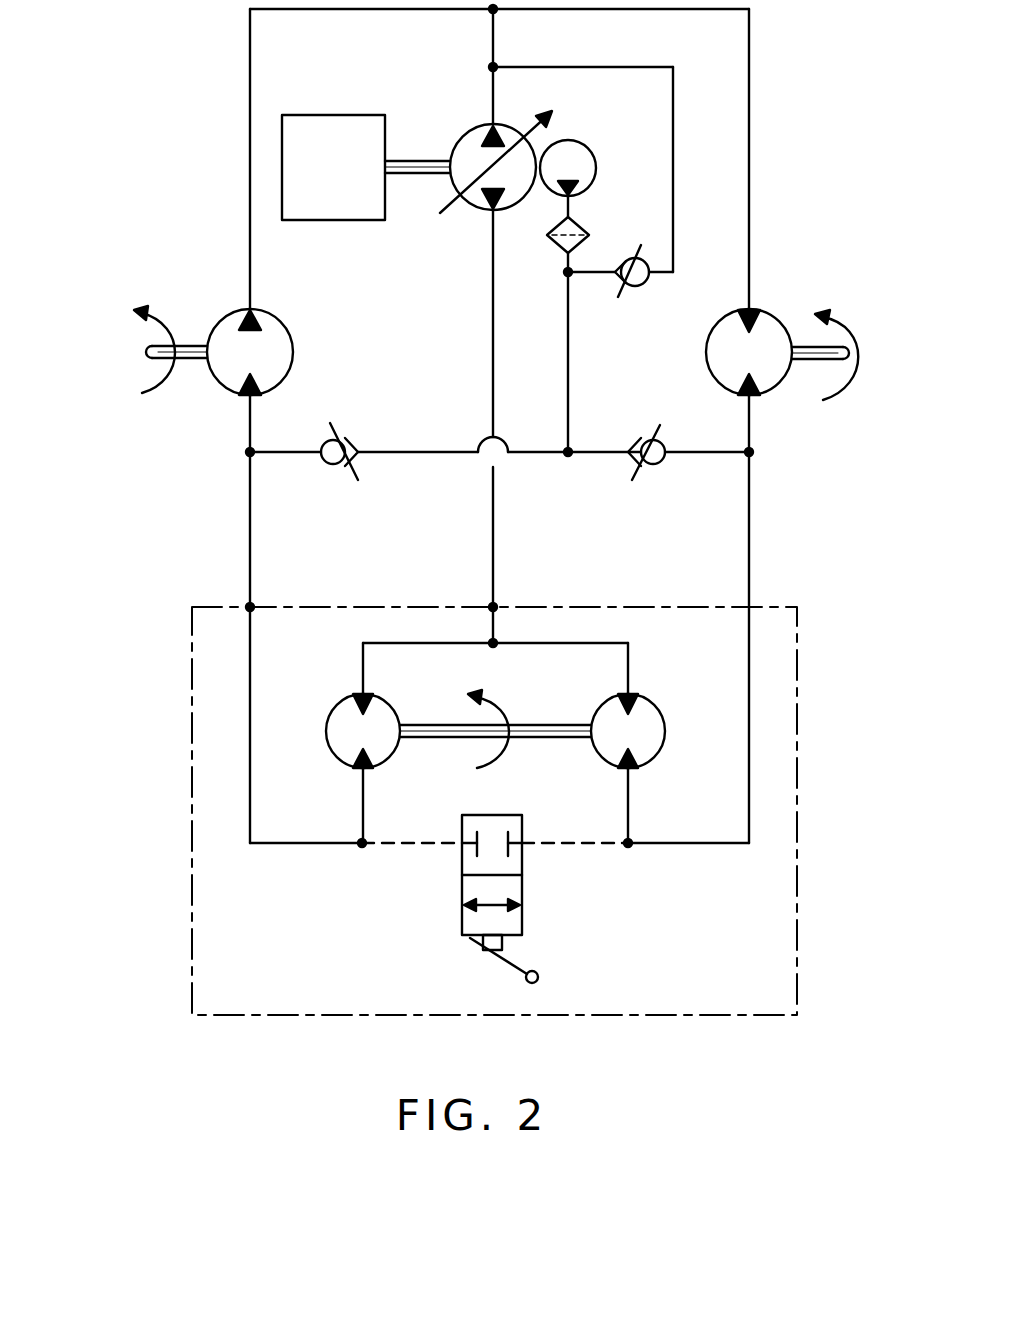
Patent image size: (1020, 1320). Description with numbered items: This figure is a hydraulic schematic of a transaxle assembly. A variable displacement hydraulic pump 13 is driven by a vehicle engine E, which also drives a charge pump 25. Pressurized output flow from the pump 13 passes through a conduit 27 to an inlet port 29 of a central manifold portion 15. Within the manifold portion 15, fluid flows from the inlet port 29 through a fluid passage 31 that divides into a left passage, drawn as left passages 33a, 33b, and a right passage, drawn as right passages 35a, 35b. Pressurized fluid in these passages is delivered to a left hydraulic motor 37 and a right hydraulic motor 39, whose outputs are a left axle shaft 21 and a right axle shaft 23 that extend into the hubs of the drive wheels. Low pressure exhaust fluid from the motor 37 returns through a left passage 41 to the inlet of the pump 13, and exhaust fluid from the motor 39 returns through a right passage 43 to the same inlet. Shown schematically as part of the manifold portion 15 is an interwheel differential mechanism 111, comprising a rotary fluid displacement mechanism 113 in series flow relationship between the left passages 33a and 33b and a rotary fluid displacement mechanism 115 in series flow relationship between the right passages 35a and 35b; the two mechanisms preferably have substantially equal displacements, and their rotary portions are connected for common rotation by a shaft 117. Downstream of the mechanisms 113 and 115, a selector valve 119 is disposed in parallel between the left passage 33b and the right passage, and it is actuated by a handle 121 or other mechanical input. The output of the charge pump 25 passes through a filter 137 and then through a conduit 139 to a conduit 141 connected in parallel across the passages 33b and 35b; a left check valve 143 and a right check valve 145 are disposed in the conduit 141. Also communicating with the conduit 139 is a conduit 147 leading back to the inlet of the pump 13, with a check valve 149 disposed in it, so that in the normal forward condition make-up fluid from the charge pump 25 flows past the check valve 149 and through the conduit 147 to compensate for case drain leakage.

The vehicle engine E is at (345, 115).
The variable displacement hydraulic pump 13 is at (478, 135).
The central manifold portion 15 is at (583, 600).
The left axle shaft 21 is at (187, 360).
The right axle shaft 23 is at (806, 360).
The charge pump 25 is at (573, 141).
The conduit 27 is at (493, 370).
The inlet port 29 is at (490, 605).
The fluid passage 31 is at (496, 643).
The left passage 33a is at (363, 670).
The left passage 33b is at (250, 550).
The right passage 35a is at (628, 668).
The right passage 35b is at (749, 490).
The hydraulic motor 37 is at (290, 333).
The hydraulic motor 39 is at (712, 333).
The left passage 41 is at (250, 158).
The right passage 43 is at (749, 130).
The interwheel differential mechanism 111 is at (410, 880).
The rotary fluid displacement mechanism 113 is at (325, 740).
The rotary fluid displacement mechanism 115 is at (670, 743).
The shaft 117 is at (565, 725).
The selector valve 119 is at (522, 870).
The handle 121 is at (500, 965).
The filter 137 is at (585, 224).
The conduit 139 is at (568, 380).
The conduit 141 is at (397, 452).
The left check valve 143 is at (347, 428).
The right check valve 145 is at (645, 467).
The conduit 147 is at (673, 93).
The check valve 149 is at (628, 286).